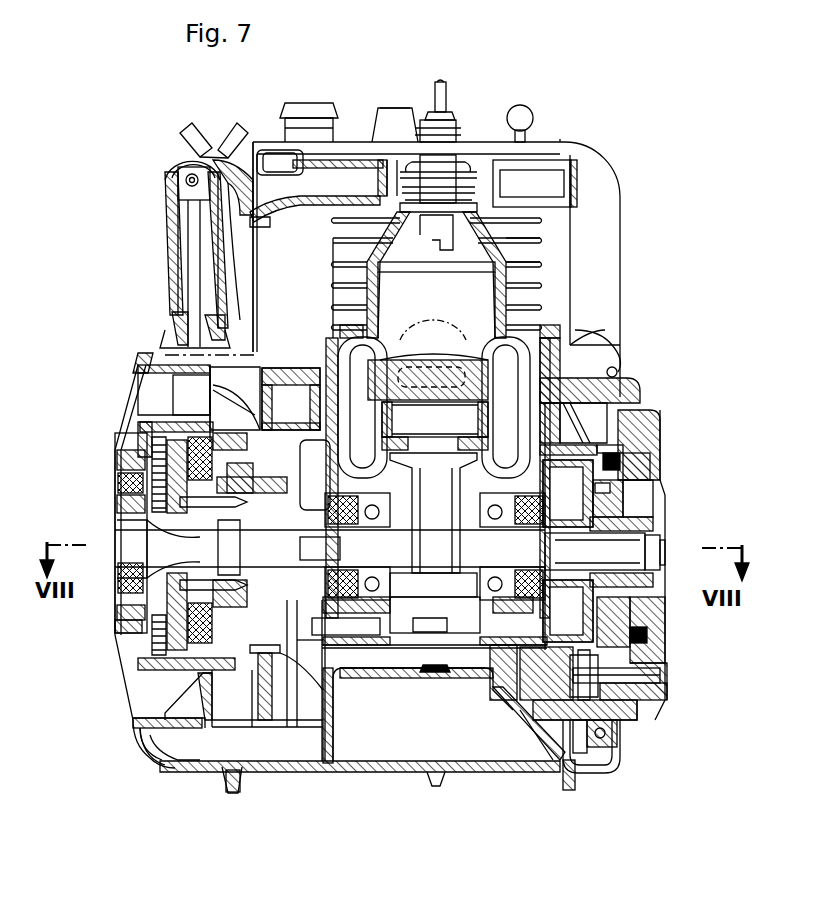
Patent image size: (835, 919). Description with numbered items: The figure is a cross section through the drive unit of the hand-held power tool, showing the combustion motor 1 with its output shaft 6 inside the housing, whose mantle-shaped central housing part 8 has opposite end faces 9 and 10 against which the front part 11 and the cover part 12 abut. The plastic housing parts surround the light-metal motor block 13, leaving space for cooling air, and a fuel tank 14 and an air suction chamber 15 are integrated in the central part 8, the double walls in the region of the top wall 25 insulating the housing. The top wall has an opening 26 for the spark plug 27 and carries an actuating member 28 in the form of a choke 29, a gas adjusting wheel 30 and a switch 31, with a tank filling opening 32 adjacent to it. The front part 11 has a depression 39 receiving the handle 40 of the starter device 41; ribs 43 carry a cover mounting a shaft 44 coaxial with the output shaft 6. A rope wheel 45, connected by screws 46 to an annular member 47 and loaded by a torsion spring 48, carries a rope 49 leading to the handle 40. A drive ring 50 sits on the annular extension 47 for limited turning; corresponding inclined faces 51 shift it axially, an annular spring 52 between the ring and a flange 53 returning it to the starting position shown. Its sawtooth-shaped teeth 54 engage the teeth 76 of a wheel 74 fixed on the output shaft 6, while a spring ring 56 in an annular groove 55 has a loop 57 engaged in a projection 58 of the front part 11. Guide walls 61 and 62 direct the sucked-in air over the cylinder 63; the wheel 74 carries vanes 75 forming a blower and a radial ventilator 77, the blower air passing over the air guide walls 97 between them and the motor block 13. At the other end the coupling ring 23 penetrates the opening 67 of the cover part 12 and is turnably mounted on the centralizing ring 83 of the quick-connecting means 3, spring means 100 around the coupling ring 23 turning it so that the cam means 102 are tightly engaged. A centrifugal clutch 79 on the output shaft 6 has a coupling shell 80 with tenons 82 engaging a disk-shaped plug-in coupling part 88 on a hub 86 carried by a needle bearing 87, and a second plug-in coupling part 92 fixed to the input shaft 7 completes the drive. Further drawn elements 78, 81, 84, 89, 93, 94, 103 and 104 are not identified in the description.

The combustion motor 1 is at (545, 255).
The quick-connecting means 3 is at (645, 703).
The output shaft 6 is at (465, 600).
The input shaft 7 is at (650, 505).
The central housing part 8 is at (442, 780).
The end face 9 is at (215, 320).
The end face 10 is at (545, 293).
The front part 11 is at (155, 352).
The cover part 12 is at (602, 305).
The motor block 13 is at (555, 300).
The fuel tank 14 is at (368, 735).
The air suction chamber 15 is at (548, 185).
The coupling ring 23 is at (640, 397).
The top wall 25 is at (488, 143).
The opening 26 is at (390, 165).
The spark plug 27 is at (452, 155).
The actuating member 28 is at (540, 137).
The choke 29 is at (292, 128).
The gas adjusting wheel 30 is at (400, 120).
The switch 31 is at (526, 116).
The tank filling opening 32 is at (222, 142).
The depression 39 is at (166, 332).
The handle 40 is at (180, 230).
The starter device 41 is at (163, 413).
The ribs 43 is at (140, 375).
The shaft 44 is at (122, 553).
The rope wheel 45 is at (150, 540).
The screws 46 is at (112, 560).
The annular member 47 is at (270, 508).
The torsion spring 48 is at (150, 672).
The rope 49 is at (192, 255).
The drive ring 50 is at (325, 690).
The inclined faces 51 is at (135, 455).
The annular spring 52 is at (140, 429).
The flange 53 is at (272, 488).
The sawtooth-shaped teeth 54 is at (340, 667).
The annular groove 55 is at (215, 722).
The spring ring 56 is at (135, 455).
The loop 57 is at (172, 755).
The projection 58 is at (205, 715).
The guide wall 61 is at (132, 715).
The guide wall 62 is at (152, 740).
The cylinder 63 is at (520, 275).
The opening 67 is at (617, 372).
The wheel 74 is at (135, 650).
The vanes 75 is at (305, 715).
The teeth 76 is at (276, 435).
The radial ventilator 77 is at (255, 723).
The bracket 78 is at (300, 405).
The centrifugal clutch 79 is at (642, 598).
The coupling shell 80 is at (632, 442).
The stator 81 is at (647, 490).
The tenons 82 is at (652, 468).
The centralizing ring 83 is at (648, 690).
The wall 84 is at (520, 705).
The hub 86 is at (650, 520).
The needle bearing 87 is at (645, 560).
The plug-in coupling part 88 is at (640, 615).
The shaft 89 is at (650, 672).
The second plug-in coupling part 92 is at (650, 635).
The wall 93 is at (562, 720).
The bolt 94 is at (612, 725).
The air guide walls 97 is at (400, 680).
The spring means 100 is at (603, 735).
The cam means 102 is at (612, 730).
The foot 103 is at (580, 780).
The bracket 104 is at (625, 428).